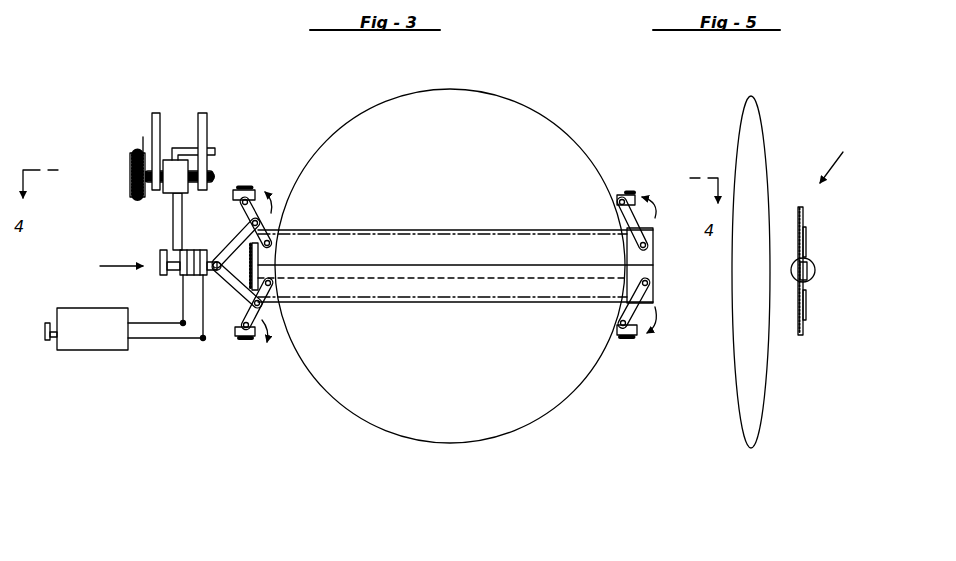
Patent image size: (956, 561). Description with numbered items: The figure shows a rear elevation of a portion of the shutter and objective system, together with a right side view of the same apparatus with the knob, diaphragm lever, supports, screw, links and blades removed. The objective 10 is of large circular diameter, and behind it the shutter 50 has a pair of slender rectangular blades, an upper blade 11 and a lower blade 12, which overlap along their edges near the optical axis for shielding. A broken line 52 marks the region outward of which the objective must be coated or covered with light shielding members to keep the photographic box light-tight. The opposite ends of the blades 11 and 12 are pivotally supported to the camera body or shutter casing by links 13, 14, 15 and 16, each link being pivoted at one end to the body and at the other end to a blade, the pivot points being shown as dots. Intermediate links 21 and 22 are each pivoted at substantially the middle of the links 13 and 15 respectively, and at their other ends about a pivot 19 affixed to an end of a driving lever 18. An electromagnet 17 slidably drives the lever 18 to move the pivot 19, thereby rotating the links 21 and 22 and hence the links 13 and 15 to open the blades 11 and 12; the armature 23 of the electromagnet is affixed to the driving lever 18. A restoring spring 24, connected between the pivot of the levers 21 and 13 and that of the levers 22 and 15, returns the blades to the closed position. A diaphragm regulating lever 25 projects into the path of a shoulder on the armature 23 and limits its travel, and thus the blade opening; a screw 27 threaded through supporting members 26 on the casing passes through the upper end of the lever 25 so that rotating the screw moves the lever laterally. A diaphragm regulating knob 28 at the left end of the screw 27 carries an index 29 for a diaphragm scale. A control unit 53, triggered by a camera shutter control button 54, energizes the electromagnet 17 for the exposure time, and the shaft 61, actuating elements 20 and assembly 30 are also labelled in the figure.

In FIG. 3, the objective 10 is at (578, 156).
In FIG. 5, the objective 10 is at (752, 418).
In FIG. 3, the upper blade 11 is at (615, 195).
In FIG. 3, the lower blade 12 is at (590, 300).
In FIG. 3, the link 13 is at (234, 208).
In FIG. 5, the link 13 is at (803, 210).
In FIG. 3, the link 14 is at (650, 235).
In FIG. 3, the link 15 is at (250, 336).
In FIG. 5, the link 15 is at (798, 327).
In FIG. 3, the link 16 is at (653, 300).
In FIG. 3, the electromagnet 17 is at (180, 247).
In FIG. 5, the electromagnet 17 is at (815, 268).
In FIG. 3, the driving lever 18 is at (173, 276).
In FIG. 3, the pivot 19 is at (223, 273).
In FIG. 3, the pawl pad 20 is at (644, 190).
In FIG. 5, the pawl pad 20 is at (800, 209).
In FIG. 3, the intermediate link 21 is at (220, 240).
In FIG. 5, the intermediate link 21 is at (806, 240).
In FIG. 3, the intermediate link 22 is at (233, 292).
In FIG. 5, the intermediate link 22 is at (806, 305).
In FIG. 3, the armature 23 is at (158, 253).
In FIG. 5, the armature 23 is at (807, 278).
In FIG. 3, the restoring spring 24 is at (266, 220).
In FIG. 3, the diaphragm regulating lever 25 is at (170, 203).
In FIG. 3, the supporting members 26 is at (158, 125).
In FIG. 3, the screw 27 is at (212, 177).
In FIG. 3, the diaphragm regulating knob 28 is at (130, 170).
In FIG. 3, the index 29 is at (143, 146).
In FIG. 5, the actuator assembly 30 is at (841, 167).
In FIG. 3, the shutter 50 is at (653, 266).
In FIG. 3, the broken line 52 is at (440, 292).
In FIG. 3, the control unit 53 is at (110, 338).
In FIG. 3, the camera shutter control button 54 is at (50, 342).
In FIG. 3, the shaft 61 is at (437, 243).